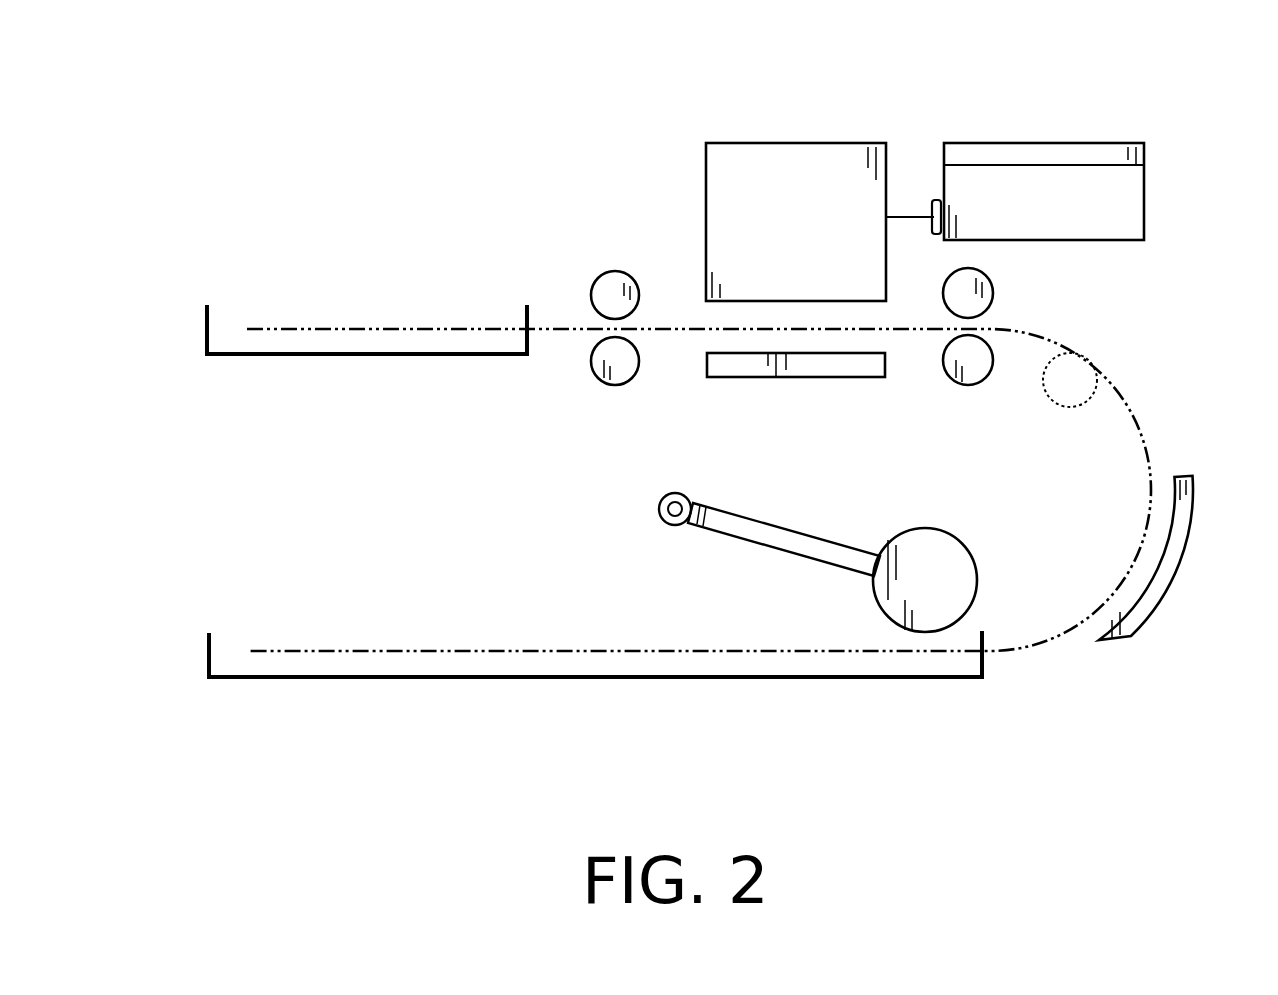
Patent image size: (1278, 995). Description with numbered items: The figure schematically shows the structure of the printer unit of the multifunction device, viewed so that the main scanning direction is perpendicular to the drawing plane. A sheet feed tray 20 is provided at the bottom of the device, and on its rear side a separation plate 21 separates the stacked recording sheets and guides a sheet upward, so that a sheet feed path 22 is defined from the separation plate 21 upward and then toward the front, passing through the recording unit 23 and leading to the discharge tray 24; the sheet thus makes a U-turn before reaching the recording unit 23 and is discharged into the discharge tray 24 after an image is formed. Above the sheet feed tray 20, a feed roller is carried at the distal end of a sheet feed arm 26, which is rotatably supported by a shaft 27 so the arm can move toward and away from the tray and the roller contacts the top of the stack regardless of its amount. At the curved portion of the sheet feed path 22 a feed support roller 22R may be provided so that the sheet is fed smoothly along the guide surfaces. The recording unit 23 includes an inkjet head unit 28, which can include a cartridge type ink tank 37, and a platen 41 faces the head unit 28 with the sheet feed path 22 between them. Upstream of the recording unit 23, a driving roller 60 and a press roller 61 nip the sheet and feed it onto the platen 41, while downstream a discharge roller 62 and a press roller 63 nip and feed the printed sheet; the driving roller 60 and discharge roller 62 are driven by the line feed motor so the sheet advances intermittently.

The sheet feed tray 20 is at (470, 679).
The separation plate 21 is at (1168, 572).
The sheet feed path 22 is at (1147, 443).
The feed support roller 22R is at (1110, 397).
The recording unit 23 is at (937, 58).
The discharge tray 24 is at (352, 357).
The sheet feed arm 26 is at (822, 552).
The shaft 27 is at (659, 510).
The inkjet head unit 28 is at (800, 112).
The cartridge type ink tank 37 is at (1082, 151).
The platen 41 is at (826, 378).
The driving roller 60 is at (981, 386).
The press roller 61 is at (993, 293).
The discharge roller 62 is at (607, 382).
The press roller 63 is at (614, 273).